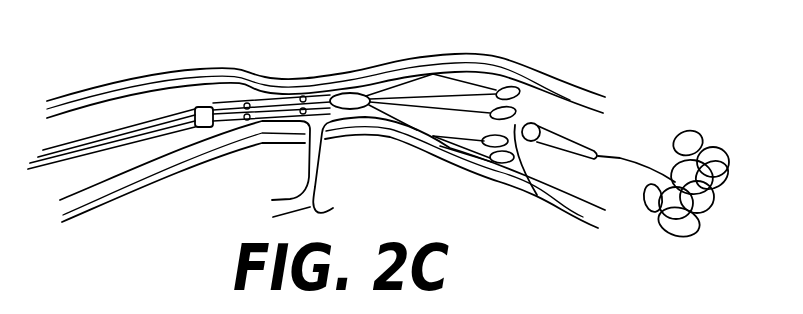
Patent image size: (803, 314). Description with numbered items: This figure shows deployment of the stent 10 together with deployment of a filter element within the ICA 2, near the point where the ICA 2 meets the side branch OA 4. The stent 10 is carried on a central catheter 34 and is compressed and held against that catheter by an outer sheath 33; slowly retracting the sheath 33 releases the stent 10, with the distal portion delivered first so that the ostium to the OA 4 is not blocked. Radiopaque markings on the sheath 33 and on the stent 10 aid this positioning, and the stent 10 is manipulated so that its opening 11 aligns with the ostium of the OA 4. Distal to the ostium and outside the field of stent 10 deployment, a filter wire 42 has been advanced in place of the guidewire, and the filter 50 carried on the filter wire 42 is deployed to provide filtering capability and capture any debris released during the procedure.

The ICA 2 is at (537, 76).
The OA 4 is at (333, 208).
The stent 10 is at (451, 150).
The opening 11 is at (351, 103).
The outer sheath 33 is at (42, 171).
The central catheter 34 is at (537, 196).
The filter wire 42 is at (620, 160).
The filter 50 is at (713, 146).